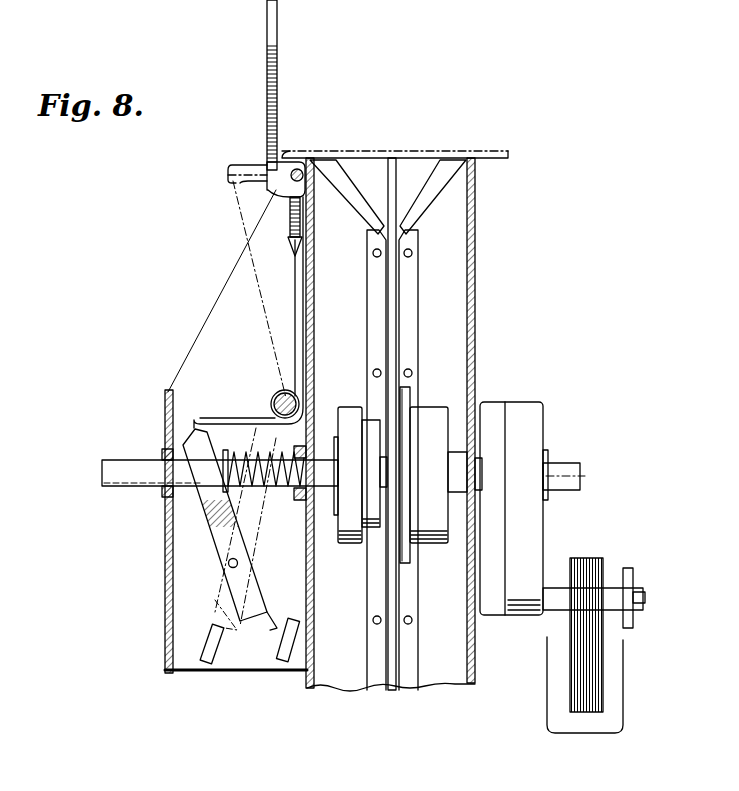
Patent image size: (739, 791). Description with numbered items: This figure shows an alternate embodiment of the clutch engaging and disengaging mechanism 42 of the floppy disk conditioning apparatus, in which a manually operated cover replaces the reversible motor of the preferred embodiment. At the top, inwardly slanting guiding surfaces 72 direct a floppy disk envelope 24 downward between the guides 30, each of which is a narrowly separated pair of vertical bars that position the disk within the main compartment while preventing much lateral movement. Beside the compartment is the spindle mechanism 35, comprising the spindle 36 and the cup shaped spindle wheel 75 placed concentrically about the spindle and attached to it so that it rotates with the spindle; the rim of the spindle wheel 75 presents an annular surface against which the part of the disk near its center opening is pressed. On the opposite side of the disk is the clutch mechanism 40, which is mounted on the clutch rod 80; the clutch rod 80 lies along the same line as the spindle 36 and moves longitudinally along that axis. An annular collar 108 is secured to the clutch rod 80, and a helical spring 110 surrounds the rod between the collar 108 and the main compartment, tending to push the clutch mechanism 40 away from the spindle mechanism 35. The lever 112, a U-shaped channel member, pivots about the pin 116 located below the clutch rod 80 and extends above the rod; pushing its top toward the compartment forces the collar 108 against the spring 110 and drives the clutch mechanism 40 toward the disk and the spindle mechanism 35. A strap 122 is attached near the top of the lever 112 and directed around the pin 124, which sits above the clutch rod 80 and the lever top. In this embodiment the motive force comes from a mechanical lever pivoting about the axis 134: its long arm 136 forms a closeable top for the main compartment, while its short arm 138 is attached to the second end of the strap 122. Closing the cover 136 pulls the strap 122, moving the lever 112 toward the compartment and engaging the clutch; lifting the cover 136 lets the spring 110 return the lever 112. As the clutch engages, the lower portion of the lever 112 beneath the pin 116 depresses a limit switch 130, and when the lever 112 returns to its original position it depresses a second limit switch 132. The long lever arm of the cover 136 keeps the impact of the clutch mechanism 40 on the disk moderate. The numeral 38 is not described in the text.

The floppy disk envelope 24 is at (393, 157).
The guides 30 is at (395, 290).
The spindle mechanism 35 is at (445, 392).
The spindle 36 is at (580, 478).
The motor 38 is at (543, 422).
The clutch mechanism 40 is at (352, 396).
The clutch engaging and disengaging mechanism 42 is at (203, 398).
The guiding surfaces 72 is at (347, 162).
The spindle wheel 75 is at (430, 523).
The clutch rod 80 is at (102, 473).
The annular collar 108 is at (227, 457).
The helical spring 110 is at (272, 497).
The lever 112 is at (210, 513).
The pivot pin 116 is at (229, 565).
The strap 122 is at (297, 275).
The pin 124 is at (285, 390).
The limit switch 130 is at (207, 648).
The second limit switch 132 is at (290, 657).
The axis 134 is at (290, 175).
The long arm 136 is at (278, 62).
The short arm 138 is at (289, 214).